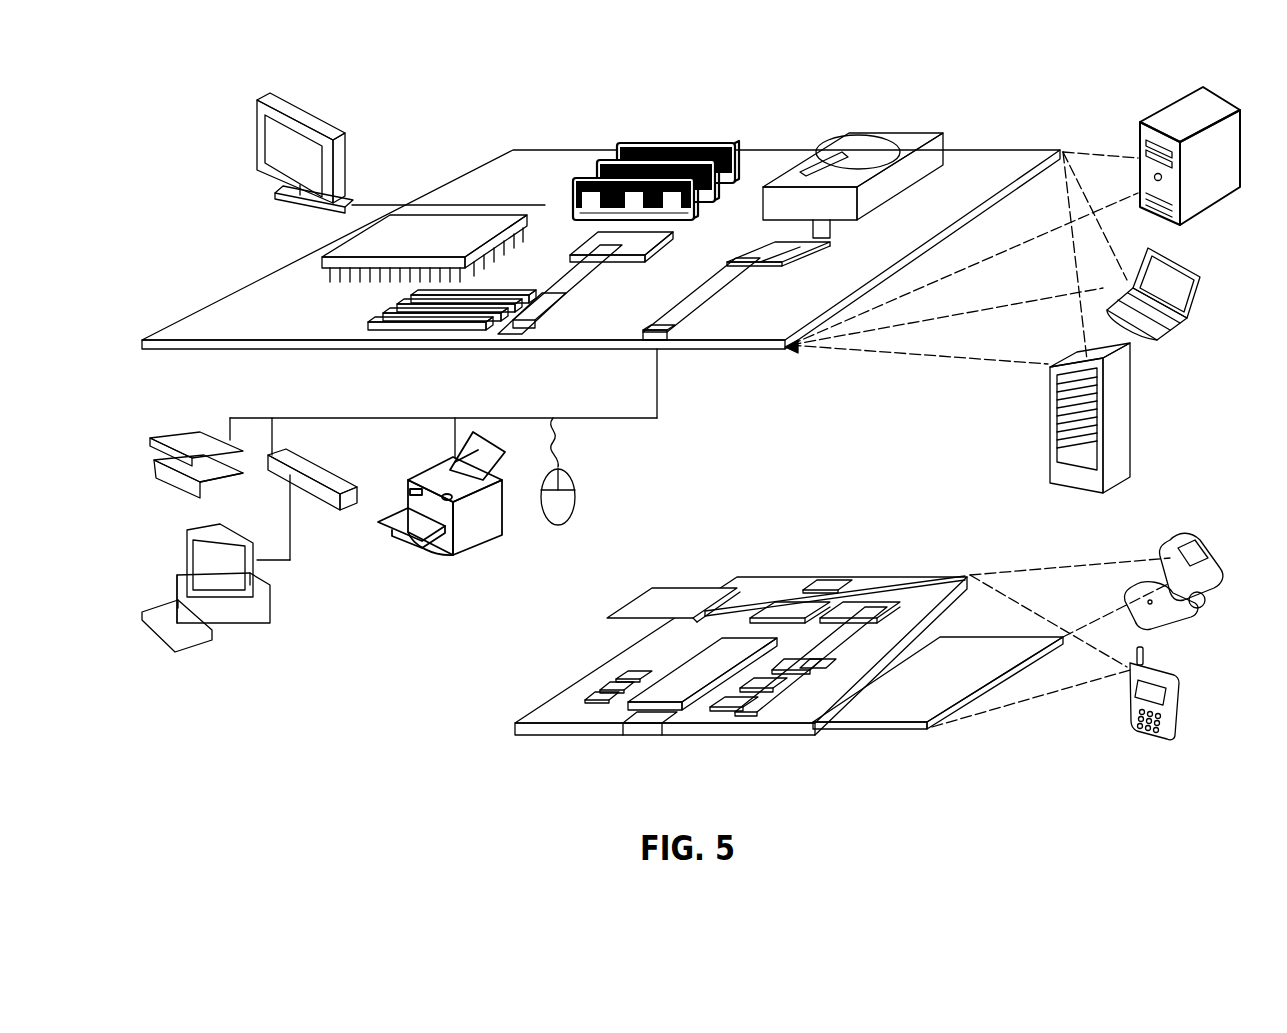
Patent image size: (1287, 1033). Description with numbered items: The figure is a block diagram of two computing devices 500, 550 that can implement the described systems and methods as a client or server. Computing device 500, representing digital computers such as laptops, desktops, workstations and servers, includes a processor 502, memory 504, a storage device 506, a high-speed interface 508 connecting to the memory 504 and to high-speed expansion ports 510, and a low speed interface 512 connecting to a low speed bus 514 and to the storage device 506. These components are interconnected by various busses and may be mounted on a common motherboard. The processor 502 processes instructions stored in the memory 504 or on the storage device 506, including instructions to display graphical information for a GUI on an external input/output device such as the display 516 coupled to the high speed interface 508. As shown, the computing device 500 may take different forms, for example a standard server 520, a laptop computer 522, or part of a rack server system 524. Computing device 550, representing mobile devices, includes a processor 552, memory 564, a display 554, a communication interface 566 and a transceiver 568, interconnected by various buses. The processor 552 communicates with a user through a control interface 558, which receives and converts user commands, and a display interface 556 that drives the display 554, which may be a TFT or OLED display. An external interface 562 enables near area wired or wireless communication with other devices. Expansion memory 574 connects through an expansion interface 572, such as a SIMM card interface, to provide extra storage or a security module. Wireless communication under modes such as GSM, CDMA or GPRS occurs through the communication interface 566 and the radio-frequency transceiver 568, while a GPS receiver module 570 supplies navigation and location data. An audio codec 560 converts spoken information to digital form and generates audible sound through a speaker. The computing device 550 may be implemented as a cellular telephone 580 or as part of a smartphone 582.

The computing device 500 is at (442, 128).
The processor 502 is at (335, 263).
The memory 504 is at (618, 154).
The storage device 506 is at (844, 147).
The high-speed interface 508 is at (601, 245).
The high-speed expansion ports 510 is at (385, 318).
The low speed interface 512 is at (758, 251).
The low speed bus 514 is at (660, 346).
The display 516 is at (262, 104).
The standard server 520 is at (1140, 137).
The laptop computer 522 is at (1199, 273).
The rack server system 524 is at (1052, 450).
The computing device 550 is at (494, 739).
The processor 552 is at (680, 695).
The display 554 is at (900, 708).
The display interface 556 is at (747, 706).
The control interface 558 is at (770, 692).
The audio codec 560 is at (794, 684).
The external interface 562 is at (644, 735).
The memory 564 is at (592, 694).
The communication interface 566 is at (790, 603).
The transceiver 568 is at (860, 604).
The GPS receiver module 570 is at (834, 582).
The expansion interface 572 is at (722, 585).
The expansion memory 574 is at (650, 591).
The cellular telephone 580 is at (1172, 540).
The smartphone 582 is at (1130, 715).